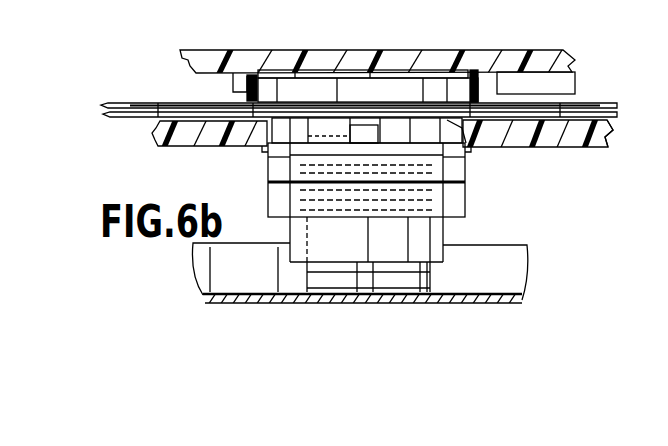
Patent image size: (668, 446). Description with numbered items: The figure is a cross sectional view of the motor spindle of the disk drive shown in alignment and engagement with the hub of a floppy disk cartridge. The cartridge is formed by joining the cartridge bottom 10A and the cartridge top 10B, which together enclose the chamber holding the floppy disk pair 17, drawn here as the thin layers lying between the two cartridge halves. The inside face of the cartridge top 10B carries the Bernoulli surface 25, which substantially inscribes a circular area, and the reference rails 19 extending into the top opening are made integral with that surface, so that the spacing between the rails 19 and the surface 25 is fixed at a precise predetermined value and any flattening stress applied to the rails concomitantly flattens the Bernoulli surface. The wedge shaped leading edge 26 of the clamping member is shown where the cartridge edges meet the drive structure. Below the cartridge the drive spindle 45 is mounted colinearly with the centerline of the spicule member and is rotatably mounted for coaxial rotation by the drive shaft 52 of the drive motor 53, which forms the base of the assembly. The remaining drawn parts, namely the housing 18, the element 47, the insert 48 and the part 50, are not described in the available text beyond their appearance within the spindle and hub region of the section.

The cartridge bottom 10A is at (228, 54).
The cartridge top 10B is at (191, 147).
The floppy disk pair 17 is at (107, 107).
The connector housing 18 is at (346, 92).
The rails 19 is at (264, 149).
The Bernoulli surface 25 is at (613, 131).
The wedge shaped leading edge 26 is at (271, 157).
The drive spindle 45 is at (457, 190).
The contact carrier 47 is at (370, 136).
The threaded insert 48 is at (394, 142).
The seal 50 is at (464, 130).
The drive shaft 52 is at (373, 274).
The drive motor 53 is at (168, 292).